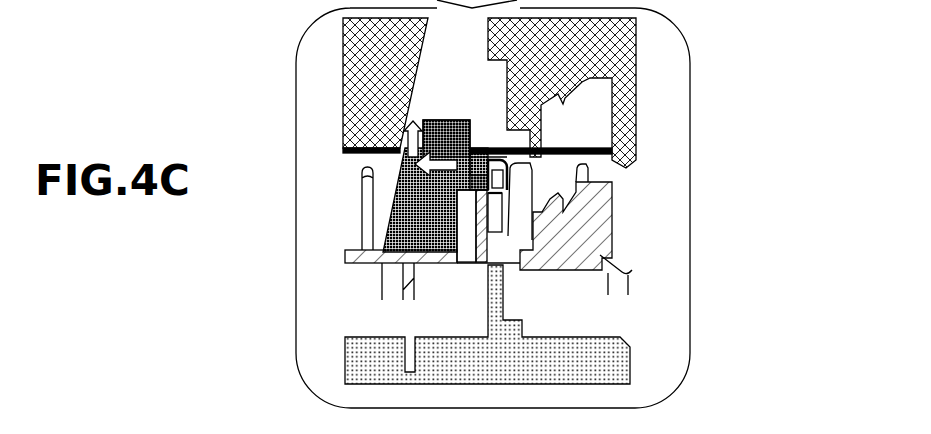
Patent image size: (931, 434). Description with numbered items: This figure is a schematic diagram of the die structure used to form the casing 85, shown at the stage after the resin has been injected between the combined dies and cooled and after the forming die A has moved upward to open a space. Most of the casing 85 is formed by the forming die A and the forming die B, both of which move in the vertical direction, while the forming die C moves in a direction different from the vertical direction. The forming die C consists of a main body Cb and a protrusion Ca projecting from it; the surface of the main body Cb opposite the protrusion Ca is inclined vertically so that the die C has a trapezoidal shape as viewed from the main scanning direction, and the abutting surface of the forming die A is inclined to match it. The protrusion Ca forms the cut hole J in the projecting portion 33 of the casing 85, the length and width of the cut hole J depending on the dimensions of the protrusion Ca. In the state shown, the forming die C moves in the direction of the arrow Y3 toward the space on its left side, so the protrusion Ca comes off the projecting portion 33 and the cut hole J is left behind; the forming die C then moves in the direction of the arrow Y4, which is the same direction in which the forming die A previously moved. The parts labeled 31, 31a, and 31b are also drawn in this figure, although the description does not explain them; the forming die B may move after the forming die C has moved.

The forming die A is at (343, 62).
The forming die B is at (355, 362).
The forming die C is at (432, 120).
The protrusion Ca is at (485, 148).
The main body Cb is at (460, 118).
The cut hole J is at (507, 186).
The arrow Y3 is at (415, 164).
The arrow Y4 is at (403, 132).
The frame member 31 is at (630, 276).
The frame member portion 31a is at (556, 203).
The frame member portion 31b is at (560, 226).
The projecting portion 33 is at (482, 218).
The casing 85 is at (350, 255).